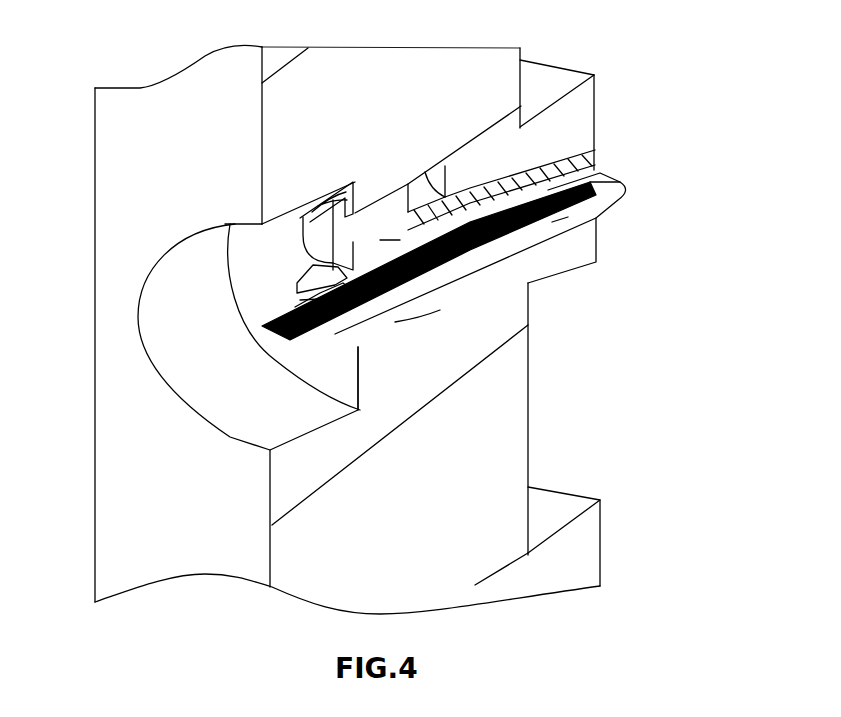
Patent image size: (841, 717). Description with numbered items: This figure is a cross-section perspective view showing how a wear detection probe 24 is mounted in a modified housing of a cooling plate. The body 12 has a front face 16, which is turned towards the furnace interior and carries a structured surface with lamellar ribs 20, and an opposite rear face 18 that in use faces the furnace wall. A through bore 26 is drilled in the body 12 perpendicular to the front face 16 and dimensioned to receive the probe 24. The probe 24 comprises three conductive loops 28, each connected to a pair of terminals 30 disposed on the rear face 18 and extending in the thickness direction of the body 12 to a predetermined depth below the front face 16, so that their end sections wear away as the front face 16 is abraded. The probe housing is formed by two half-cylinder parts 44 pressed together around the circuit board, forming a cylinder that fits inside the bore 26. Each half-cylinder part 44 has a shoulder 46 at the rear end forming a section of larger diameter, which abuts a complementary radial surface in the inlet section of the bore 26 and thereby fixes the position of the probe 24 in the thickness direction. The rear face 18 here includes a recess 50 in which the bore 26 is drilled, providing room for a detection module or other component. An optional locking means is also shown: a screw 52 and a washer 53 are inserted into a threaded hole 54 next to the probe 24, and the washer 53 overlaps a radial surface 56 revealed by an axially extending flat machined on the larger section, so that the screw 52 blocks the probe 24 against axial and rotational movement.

The body 12 is at (456, 68).
The front face 16 is at (596, 100).
The rear face 18 is at (130, 230).
The lamellar ribs 20 is at (560, 86).
The wear detection probe 24 is at (465, 265).
The through bore 26 is at (529, 166).
The conductive loops 28 is at (552, 222).
The terminals 30 is at (306, 348).
The half-cylinder parts 44 is at (597, 150).
The shoulder 46 is at (380, 240).
The recess 50 is at (210, 352).
The screw 52 is at (372, 214).
The washer 53 is at (352, 188).
The threaded hole 54 is at (415, 182).
The radial surface 56 is at (300, 279).